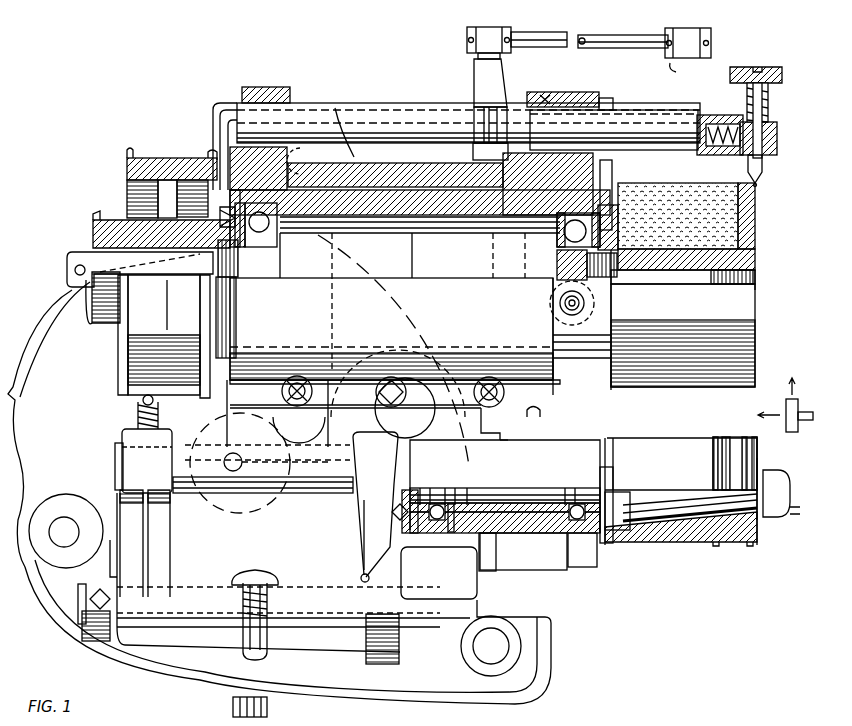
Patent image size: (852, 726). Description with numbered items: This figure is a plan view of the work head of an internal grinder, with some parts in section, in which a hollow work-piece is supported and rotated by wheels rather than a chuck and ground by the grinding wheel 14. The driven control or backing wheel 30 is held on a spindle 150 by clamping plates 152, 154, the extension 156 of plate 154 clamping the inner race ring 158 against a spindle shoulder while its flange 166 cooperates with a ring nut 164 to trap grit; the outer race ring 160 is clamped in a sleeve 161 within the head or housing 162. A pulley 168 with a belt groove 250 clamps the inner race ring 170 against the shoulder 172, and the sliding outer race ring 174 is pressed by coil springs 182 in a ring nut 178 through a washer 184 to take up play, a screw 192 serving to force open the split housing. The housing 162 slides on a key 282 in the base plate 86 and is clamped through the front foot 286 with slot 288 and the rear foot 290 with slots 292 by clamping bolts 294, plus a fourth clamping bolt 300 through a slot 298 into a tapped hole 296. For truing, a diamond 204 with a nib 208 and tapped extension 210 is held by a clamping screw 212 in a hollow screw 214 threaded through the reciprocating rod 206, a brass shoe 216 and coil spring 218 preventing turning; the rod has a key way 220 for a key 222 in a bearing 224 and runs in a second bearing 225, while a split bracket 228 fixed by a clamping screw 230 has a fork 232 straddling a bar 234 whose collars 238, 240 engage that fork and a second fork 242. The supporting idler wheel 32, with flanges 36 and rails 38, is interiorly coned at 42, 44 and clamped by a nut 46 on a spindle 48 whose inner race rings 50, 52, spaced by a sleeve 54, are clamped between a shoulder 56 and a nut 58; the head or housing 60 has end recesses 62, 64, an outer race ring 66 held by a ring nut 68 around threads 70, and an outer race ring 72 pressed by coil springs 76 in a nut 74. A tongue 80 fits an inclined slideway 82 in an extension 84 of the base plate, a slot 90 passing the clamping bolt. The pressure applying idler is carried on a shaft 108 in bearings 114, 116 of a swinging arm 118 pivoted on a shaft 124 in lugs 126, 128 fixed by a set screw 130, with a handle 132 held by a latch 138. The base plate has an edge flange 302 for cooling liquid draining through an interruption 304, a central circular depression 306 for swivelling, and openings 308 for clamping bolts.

The grinding wheel 14 is at (788, 432).
The control or backing wheel 30 is at (683, 335).
The supporting idler wheel 32 is at (681, 491).
The flanges 36 is at (749, 546).
The peripheral ribs or rails 38 is at (746, 437).
The interior cone 42 is at (622, 512).
The interior cone 44 is at (722, 506).
The nut 46 is at (774, 517).
The spindle 48 is at (522, 490).
The inner race ring 50 is at (570, 488).
The inner race ring 52 is at (448, 488).
The sleeve 54 is at (497, 500).
The shoulder 56 is at (583, 490).
The nut 58 is at (422, 490).
The head or housing 60 is at (505, 486).
The end recess 62 is at (505, 541).
The end recess 64 is at (464, 533).
The outer race ring 66 is at (582, 550).
The ring nut 68 is at (605, 543).
The right and left threads 70 is at (615, 496).
The outer race ring 72 is at (427, 533).
The nut 74 is at (374, 535).
The coil springs 76 is at (400, 514).
The tongue 80 is at (502, 430).
The inclined slideway 82 is at (497, 572).
The extension 84 is at (594, 568).
The base plate 86 is at (293, 644).
The slot 90 is at (546, 407).
The shaft 108 is at (115, 459).
The bearing 114 is at (375, 507).
The bearing 116 is at (147, 444).
The swinging arm or bracket 118 is at (275, 503).
The shaft 124 is at (92, 598).
The lug 126 is at (92, 581).
The lug 128 is at (421, 605).
The set screw 130 is at (95, 604).
The handle 132 is at (268, 652).
The latch 138 is at (233, 707).
The spindle 150 is at (758, 283).
The clamping plate 152 is at (750, 254).
The clamping plate 154 is at (640, 268).
The extension 156 is at (588, 267).
The inner race ring 158 is at (574, 264).
The outer race ring 160 is at (580, 220).
The sleeve 161 is at (415, 197).
The head or housing 162 is at (395, 331).
The ring nut 164 is at (618, 205).
The flange 166 is at (656, 188).
The pulley 168 is at (127, 162).
The inner race ring 170 is at (283, 246).
The shoulder 172 is at (241, 317).
The outer race ring 174 is at (278, 228).
The ring nut 178 is at (212, 160).
The coil springs 182 is at (212, 258).
The washer 184 is at (245, 258).
The screw 192 is at (376, 407).
The diamond 204 is at (758, 186).
The reciprocating rod 206 is at (404, 103).
The nib 208 is at (766, 170).
The tapped extension 210 is at (749, 162).
The clamping screw 212 is at (768, 97).
The hollow screw 214 is at (772, 84).
The brass shoe 216 is at (743, 118).
The coil spring 218 is at (714, 122).
The key way 220 is at (655, 110).
The key 222 is at (612, 98).
The bearing 224 is at (560, 92).
The second bearing 225 is at (284, 87).
The split bracket 228 is at (480, 87).
The clamping screw 230 is at (475, 126).
The fork 232 is at (477, 57).
The bar 234 is at (531, 37).
The pair of collars 238 is at (478, 27).
The pair of collars 240 is at (690, 28).
The second fork 242 is at (688, 72).
The groove 250 is at (100, 220).
The key 282 is at (523, 252).
The front foot or extension 286 is at (282, 404).
The slot 288 is at (292, 416).
The rear foot or extension 290 is at (395, 170).
The slots 292 is at (640, 160).
The clamping bolts 294 is at (300, 162).
The tapped hole 296 is at (560, 305).
The slot 298 is at (578, 323).
The fourth clamping bolt 300 is at (580, 300).
The edge flange or rib 302 is at (62, 313).
The interruption 304 is at (478, 600).
The central circular depression 306 is at (222, 512).
The openings 308 is at (417, 420).